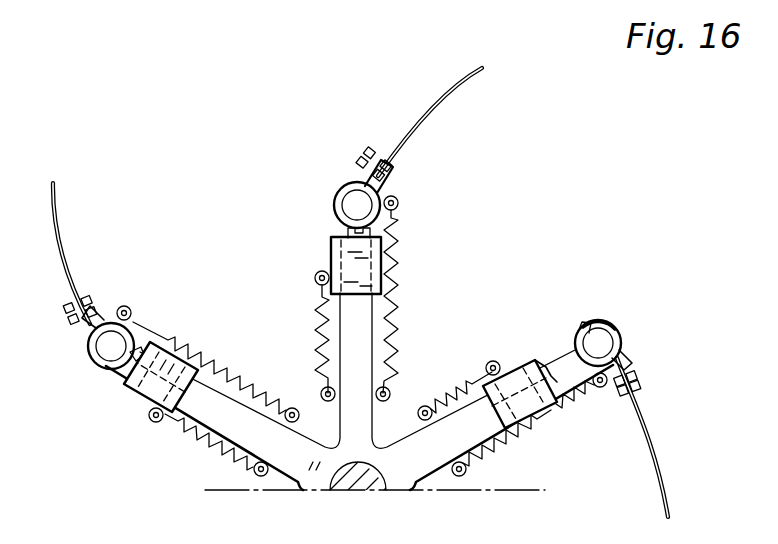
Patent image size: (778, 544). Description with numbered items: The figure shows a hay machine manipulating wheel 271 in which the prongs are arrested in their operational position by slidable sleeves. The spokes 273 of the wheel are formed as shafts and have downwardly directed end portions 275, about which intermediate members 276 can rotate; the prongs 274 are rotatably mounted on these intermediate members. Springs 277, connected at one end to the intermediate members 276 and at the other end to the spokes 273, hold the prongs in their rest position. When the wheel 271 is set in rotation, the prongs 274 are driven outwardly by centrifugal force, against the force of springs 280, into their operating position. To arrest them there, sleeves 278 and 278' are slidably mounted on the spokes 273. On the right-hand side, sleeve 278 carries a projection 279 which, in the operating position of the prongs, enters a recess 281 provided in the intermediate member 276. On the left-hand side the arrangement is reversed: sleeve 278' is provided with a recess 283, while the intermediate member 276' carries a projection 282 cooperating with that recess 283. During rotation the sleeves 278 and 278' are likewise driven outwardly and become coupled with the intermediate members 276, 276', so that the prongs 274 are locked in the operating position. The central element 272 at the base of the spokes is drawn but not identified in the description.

The manipulating wheel 271 is at (202, 205).
The pivot hub 272 is at (352, 478).
The spoke 273 is at (302, 458).
The prong 274 is at (443, 98).
The downwardly directed end portion 275 is at (360, 205).
The intermediate member 276 is at (440, 265).
The intermediate member 276' is at (87, 358).
The spring 277 is at (394, 273).
The sleeve 278 is at (430, 340).
The sleeve 278' is at (209, 360).
The projection 279 is at (536, 410).
The spring 280 is at (320, 304).
The recess 281 is at (588, 322).
The projection 282 is at (140, 330).
The recess 283 is at (140, 380).